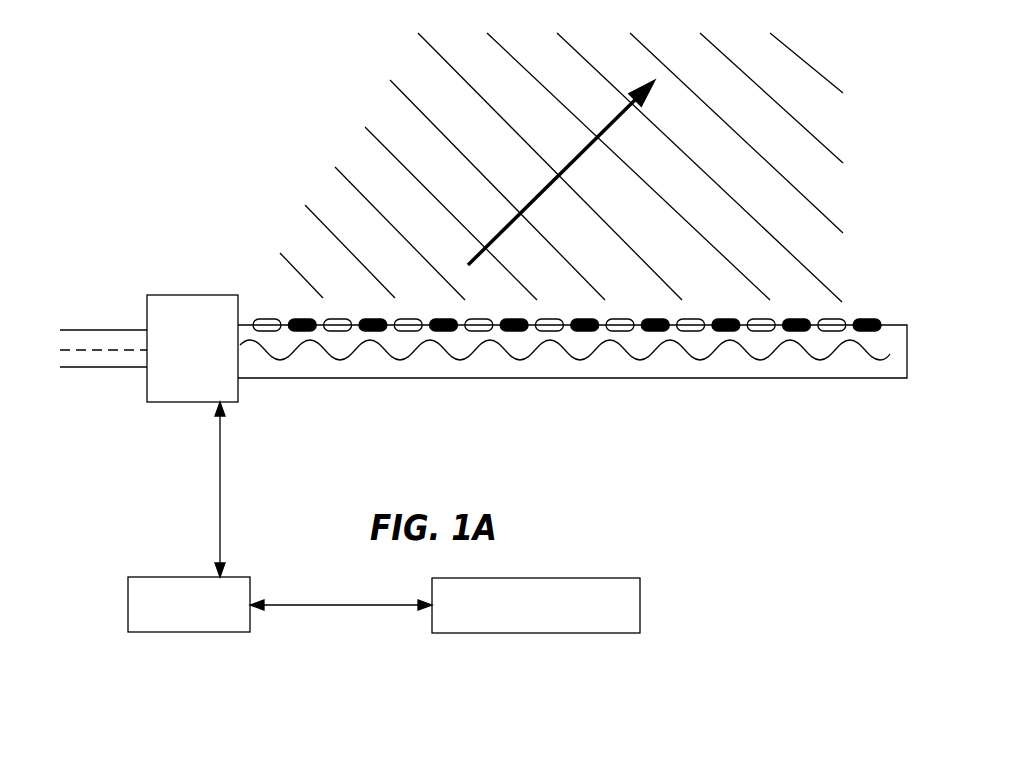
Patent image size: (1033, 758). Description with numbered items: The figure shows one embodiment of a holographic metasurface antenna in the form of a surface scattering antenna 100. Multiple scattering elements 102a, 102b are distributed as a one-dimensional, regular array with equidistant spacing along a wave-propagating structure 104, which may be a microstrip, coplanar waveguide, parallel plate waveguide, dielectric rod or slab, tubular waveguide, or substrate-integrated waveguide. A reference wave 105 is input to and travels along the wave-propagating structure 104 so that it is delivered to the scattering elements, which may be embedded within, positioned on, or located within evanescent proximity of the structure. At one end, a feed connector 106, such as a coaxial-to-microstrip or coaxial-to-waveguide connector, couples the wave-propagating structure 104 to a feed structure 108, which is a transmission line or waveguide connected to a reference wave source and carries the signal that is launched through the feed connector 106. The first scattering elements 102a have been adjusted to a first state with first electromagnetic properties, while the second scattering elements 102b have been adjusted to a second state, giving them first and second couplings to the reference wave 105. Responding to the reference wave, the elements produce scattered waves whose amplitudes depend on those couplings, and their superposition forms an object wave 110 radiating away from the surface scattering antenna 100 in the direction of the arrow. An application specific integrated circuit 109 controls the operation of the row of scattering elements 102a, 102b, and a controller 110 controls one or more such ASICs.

The surface scattering antenna 100 is at (247, 77).
The first scattering elements 102a is at (347, 337).
The second scattering elements 102b is at (338, 337).
The wave-propagating structure 104 is at (521, 388).
The reference wave 105 is at (595, 358).
The feed connector 106 is at (187, 413).
The feed structure 108 is at (115, 380).
The application specific integrated circuit 109 is at (147, 577).
The object wave 110 is at (587, 163).